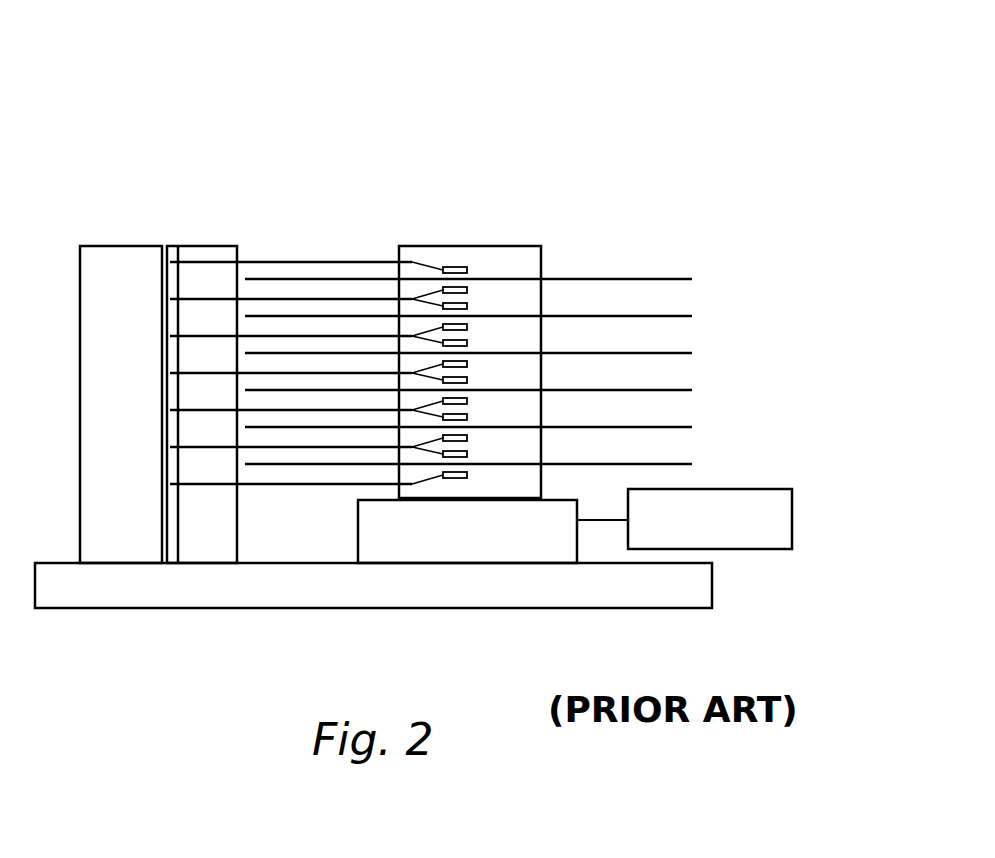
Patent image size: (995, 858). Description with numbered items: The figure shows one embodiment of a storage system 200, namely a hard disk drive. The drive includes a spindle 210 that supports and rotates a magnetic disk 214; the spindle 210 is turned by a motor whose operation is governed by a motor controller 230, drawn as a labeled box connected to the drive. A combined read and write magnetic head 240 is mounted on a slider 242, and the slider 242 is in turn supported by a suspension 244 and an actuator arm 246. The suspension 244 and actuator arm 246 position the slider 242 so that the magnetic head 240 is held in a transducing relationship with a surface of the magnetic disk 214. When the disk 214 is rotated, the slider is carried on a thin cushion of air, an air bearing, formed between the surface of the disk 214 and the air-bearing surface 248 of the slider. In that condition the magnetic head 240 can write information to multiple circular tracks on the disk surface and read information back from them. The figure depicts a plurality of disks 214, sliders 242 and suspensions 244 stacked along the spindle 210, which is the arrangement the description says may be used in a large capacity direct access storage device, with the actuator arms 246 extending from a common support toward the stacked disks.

The storage system 200 is at (566, 87).
The spindle 210 is at (530, 246).
The magnetic disk 214 is at (692, 280).
The motor controller 230 is at (747, 550).
The combined read and write magnetic head 240 is at (468, 291).
The slider 242 is at (470, 293).
The suspension 244 is at (438, 272).
The actuator arm 246 is at (357, 298).
The air-bearing surface 248 is at (468, 347).